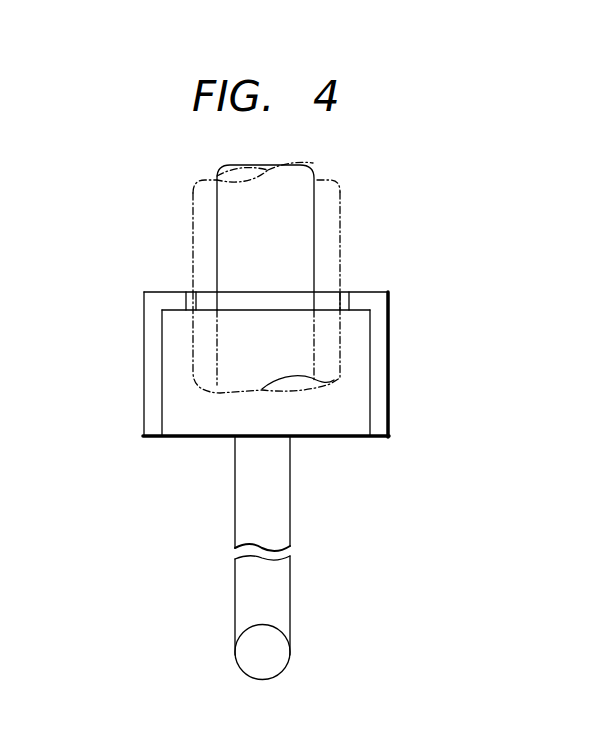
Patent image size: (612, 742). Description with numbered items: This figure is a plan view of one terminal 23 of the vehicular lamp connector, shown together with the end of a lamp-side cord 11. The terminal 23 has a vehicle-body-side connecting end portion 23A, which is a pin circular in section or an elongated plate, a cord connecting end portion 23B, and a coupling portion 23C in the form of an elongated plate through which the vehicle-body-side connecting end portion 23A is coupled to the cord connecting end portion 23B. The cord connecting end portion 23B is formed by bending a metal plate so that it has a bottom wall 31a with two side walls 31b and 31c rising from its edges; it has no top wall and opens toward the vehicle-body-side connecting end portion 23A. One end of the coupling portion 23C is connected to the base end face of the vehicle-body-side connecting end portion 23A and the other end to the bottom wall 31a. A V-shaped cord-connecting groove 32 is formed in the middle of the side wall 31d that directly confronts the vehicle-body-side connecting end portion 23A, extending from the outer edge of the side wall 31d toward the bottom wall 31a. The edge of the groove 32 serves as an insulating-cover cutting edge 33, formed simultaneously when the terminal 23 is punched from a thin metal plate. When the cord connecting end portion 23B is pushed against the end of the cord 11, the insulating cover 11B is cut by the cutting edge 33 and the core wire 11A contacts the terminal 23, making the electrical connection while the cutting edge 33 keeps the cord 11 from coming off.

The lamp-side cord 11 is at (341, 262).
The core wire 11A is at (308, 168).
The insulating cover 11B is at (342, 198).
The terminal 23 is at (288, 473).
The vehicle-body-side connecting end portion 23A is at (278, 652).
The cord connecting end portion 23B is at (281, 402).
The coupling portion 23C is at (291, 517).
The bottom wall 31a is at (186, 437).
The side wall 31b is at (143, 382).
The side wall 31c is at (390, 437).
The side wall 31d is at (365, 299).
The cord-connecting groove 32 is at (247, 300).
The insulating-cover cutting edge 33 is at (198, 292).